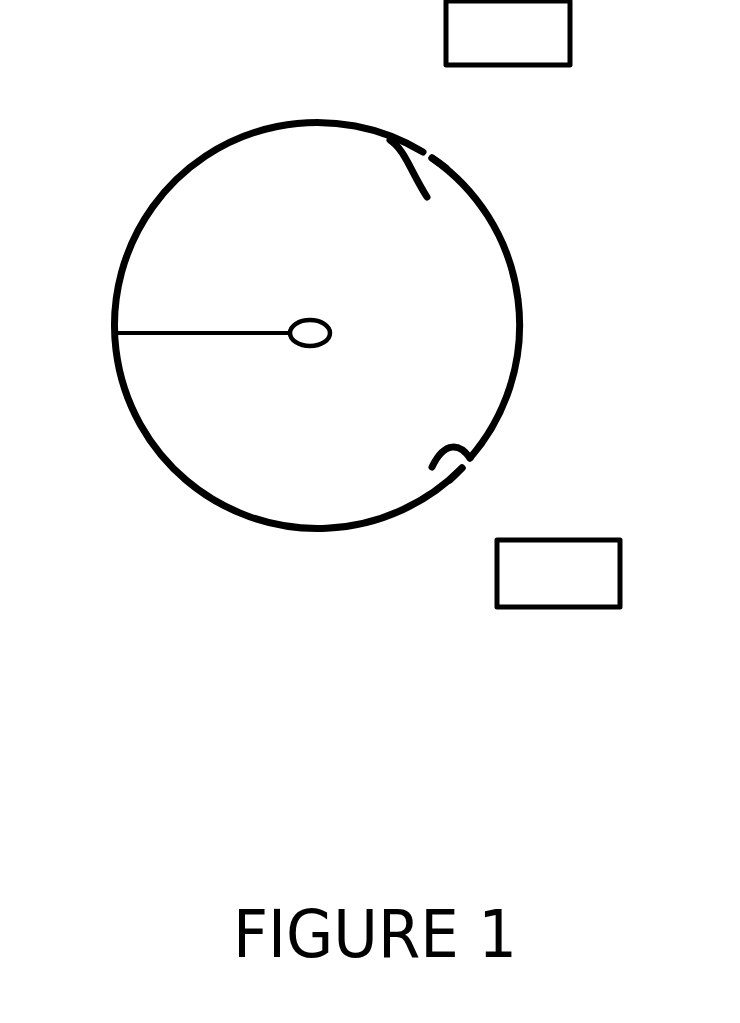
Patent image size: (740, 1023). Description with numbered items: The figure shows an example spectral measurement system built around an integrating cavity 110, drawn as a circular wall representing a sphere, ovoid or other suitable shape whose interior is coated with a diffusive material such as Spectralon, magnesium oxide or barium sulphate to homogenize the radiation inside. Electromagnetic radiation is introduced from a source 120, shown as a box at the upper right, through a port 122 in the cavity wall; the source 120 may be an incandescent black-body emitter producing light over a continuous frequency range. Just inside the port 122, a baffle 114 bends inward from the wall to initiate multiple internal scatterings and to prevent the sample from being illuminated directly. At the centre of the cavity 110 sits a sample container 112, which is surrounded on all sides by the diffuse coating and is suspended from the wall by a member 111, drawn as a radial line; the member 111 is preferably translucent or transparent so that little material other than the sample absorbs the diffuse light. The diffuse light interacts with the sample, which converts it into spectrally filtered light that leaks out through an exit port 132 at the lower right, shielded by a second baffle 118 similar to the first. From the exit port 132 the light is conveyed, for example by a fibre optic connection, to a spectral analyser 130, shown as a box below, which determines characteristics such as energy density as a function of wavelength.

The integrating cavity 110 is at (172, 182).
The translucent member 111 is at (215, 333).
The sample container 112 is at (303, 347).
The baffle 114 is at (402, 177).
The baffle 118 is at (463, 443).
The source 120 is at (432, 150).
The port 122 is at (432, 153).
The spectral analyser 130 is at (472, 470).
The exit port 132 is at (475, 462).